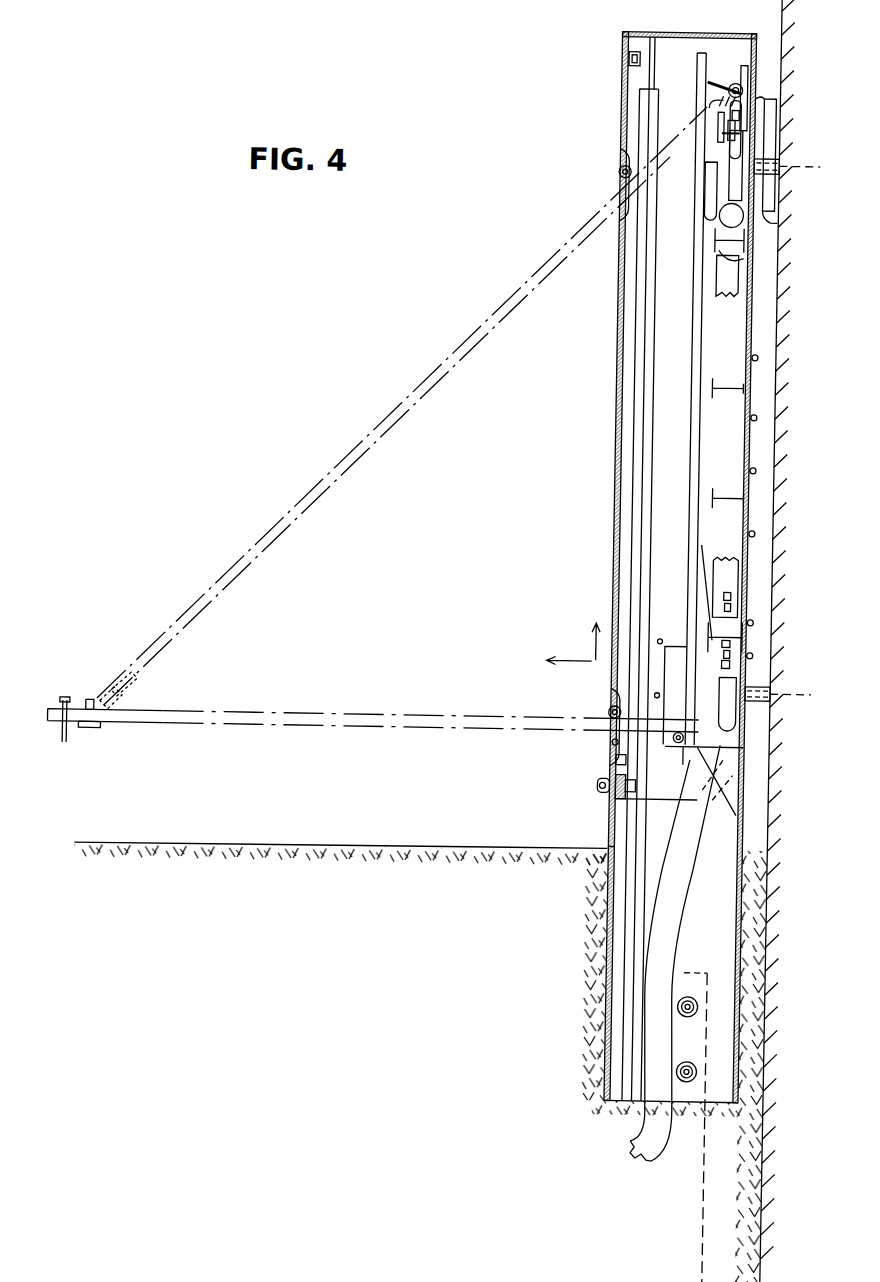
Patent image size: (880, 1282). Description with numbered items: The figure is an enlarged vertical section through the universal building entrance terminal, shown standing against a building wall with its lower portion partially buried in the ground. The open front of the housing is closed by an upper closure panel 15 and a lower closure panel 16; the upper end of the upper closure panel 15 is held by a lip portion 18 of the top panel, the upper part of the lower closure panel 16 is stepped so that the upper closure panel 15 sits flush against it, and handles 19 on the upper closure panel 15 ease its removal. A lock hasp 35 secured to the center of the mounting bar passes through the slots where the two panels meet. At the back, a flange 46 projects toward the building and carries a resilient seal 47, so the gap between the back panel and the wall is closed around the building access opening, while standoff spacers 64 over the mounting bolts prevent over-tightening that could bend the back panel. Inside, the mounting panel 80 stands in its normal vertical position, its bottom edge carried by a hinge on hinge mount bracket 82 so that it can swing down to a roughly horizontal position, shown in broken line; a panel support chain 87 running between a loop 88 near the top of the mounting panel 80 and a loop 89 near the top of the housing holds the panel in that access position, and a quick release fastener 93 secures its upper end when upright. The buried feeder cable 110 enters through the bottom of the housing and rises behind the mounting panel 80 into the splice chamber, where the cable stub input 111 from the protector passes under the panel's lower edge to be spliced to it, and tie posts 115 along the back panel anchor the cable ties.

The upper closure panel 15 is at (613, 356).
The lower closure panel 16 is at (612, 832).
The lip portion 18 is at (619, 49).
The handles 19 is at (613, 176).
The lock hasp 35 is at (600, 786).
The flange 46 is at (764, 99).
The resilient seal 47 is at (772, 224).
The standoff spacers 64 is at (772, 160).
The mounting panel 80 is at (687, 508).
The hinge mount bracket 82 is at (730, 779).
The panel support chain 87 is at (433, 385).
The loops 88 is at (92, 710).
The loops 89 is at (727, 84).
The quick release fastener 93 is at (70, 740).
The feeder cable 110 is at (630, 1145).
The cable stub input 111 is at (622, 762).
The tie posts 115 is at (720, 387).